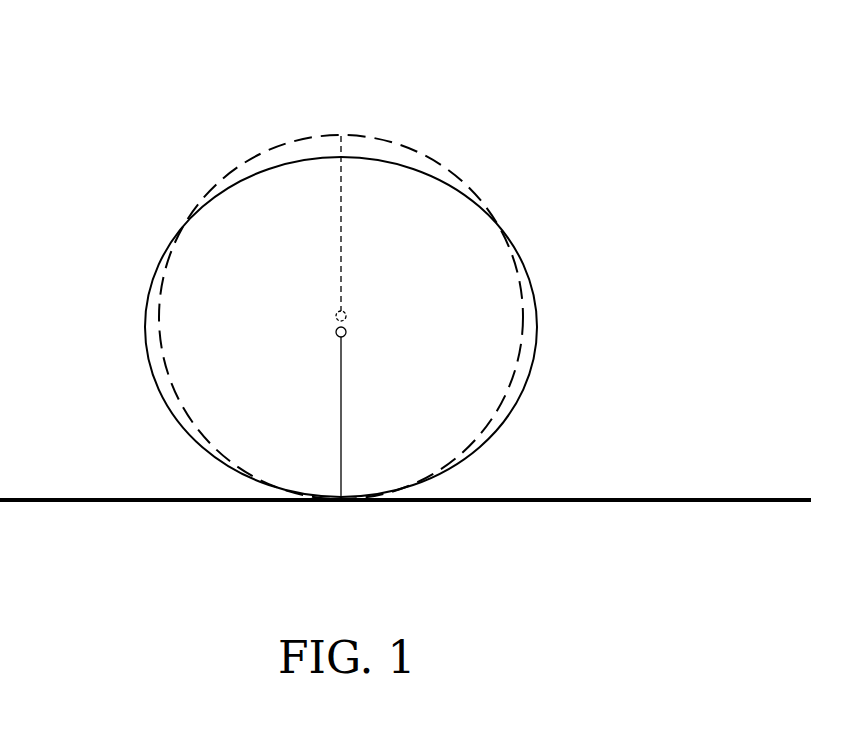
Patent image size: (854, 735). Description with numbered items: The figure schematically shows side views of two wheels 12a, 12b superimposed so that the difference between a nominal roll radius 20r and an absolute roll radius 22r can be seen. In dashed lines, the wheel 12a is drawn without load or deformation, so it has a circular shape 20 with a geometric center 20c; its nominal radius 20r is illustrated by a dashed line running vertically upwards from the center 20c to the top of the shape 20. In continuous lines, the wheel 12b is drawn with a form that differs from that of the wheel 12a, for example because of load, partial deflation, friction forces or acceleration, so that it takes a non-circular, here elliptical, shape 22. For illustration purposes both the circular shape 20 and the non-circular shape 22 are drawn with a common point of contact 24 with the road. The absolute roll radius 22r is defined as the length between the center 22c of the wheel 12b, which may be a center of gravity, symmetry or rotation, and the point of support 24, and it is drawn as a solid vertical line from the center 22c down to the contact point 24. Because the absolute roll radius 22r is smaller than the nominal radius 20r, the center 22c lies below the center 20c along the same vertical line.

The wheel 12a is at (206, 166).
The wheel 12b is at (545, 340).
The shape 20 is at (316, 135).
The nominal roll radius 20r is at (343, 217).
The geometric center 20c is at (347, 316).
The shape 22 is at (523, 395).
The absolute roll radius 22r is at (341, 395).
The center 22c is at (336, 332).
The point of contact 24 is at (341, 501).